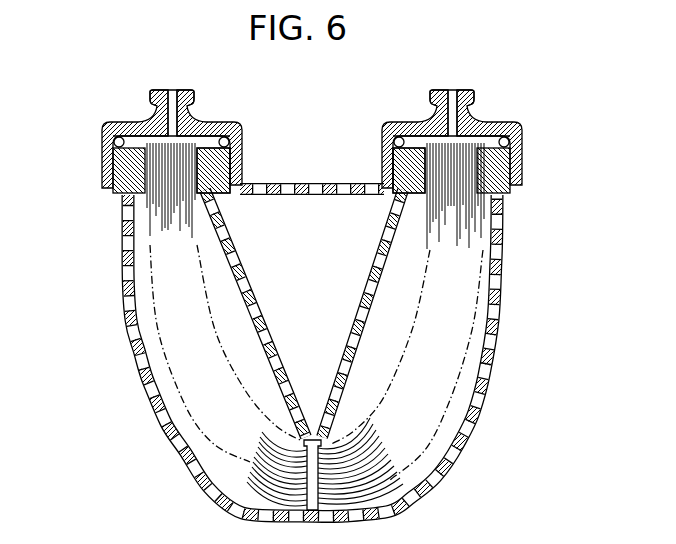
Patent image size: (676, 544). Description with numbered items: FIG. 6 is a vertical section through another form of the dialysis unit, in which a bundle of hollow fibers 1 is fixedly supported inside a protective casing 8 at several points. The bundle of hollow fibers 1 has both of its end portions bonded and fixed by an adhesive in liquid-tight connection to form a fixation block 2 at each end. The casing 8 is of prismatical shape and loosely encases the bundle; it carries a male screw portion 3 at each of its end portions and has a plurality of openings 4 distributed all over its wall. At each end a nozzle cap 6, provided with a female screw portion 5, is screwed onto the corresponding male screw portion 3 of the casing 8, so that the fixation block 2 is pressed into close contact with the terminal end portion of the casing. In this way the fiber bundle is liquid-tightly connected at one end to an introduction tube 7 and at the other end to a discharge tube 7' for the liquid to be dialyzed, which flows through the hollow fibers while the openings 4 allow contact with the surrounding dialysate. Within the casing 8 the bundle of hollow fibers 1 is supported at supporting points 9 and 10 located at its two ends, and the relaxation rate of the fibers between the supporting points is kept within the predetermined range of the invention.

The bundle of hollow fibers 1 is at (458, 327).
The fixation block 2 is at (222, 152).
The male screw portion 3 is at (232, 172).
The openings 4 is at (497, 292).
The female screw portion 5 is at (110, 175).
The nozzle cap 6 is at (121, 122).
The introduction tube 7 is at (457, 90).
The discharge tube 7' is at (186, 90).
The protective casing 8 is at (500, 246).
The supporting point 9 is at (418, 194).
The supporting point 10 is at (203, 197).